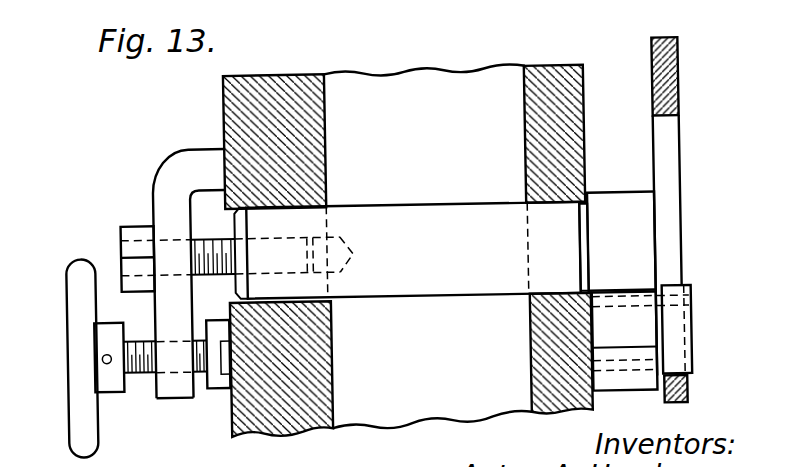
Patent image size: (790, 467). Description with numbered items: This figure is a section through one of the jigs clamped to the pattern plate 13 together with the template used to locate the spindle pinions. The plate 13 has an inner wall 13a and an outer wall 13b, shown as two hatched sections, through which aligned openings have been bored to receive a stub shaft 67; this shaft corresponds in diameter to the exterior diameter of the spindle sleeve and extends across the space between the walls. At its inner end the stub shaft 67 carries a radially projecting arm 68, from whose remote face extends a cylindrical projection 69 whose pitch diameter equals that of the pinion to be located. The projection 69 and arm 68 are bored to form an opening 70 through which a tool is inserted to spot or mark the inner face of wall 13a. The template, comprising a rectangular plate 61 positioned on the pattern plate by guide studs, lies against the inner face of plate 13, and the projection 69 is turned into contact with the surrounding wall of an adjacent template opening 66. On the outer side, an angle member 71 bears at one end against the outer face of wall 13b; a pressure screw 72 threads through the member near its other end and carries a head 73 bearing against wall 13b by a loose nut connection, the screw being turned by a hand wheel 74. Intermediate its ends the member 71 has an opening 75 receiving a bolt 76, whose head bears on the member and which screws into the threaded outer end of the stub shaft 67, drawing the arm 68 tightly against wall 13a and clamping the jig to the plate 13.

The pattern plate 13 is at (430, 68).
The inner wall 13a is at (558, 78).
The outer wall 13b is at (270, 83).
The rectangular plate 61 is at (668, 72).
The opening 66 is at (665, 142).
The stub shaft 67 is at (407, 213).
The radially projecting arm 68 is at (592, 345).
The projection 69 is at (673, 313).
The opening 70 is at (675, 352).
The angle member 71 is at (165, 176).
The pressure screw 72 is at (137, 378).
The head 73 is at (217, 387).
The hand wheel 74 is at (75, 407).
The opening 75 is at (167, 238).
The bolt 76 is at (126, 247).